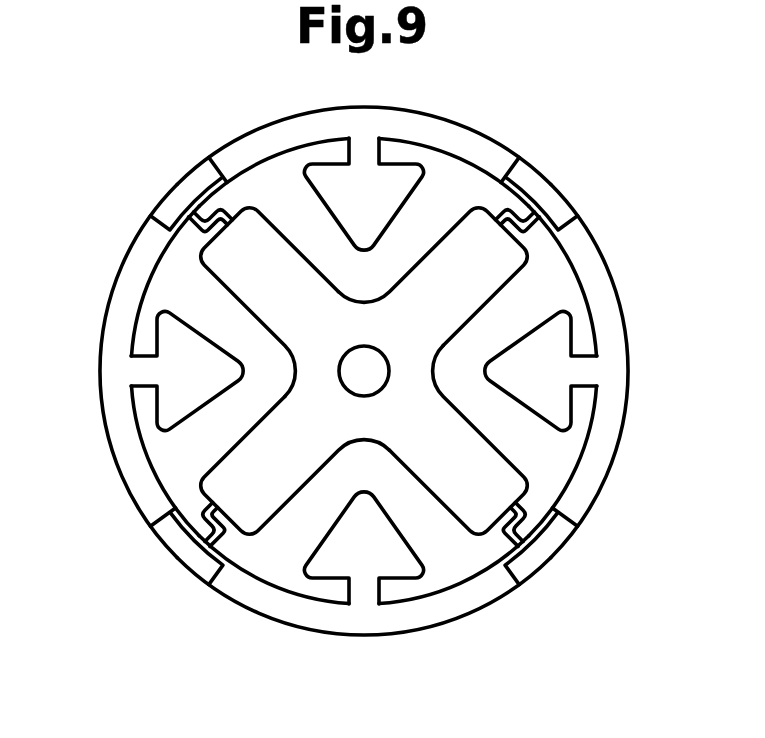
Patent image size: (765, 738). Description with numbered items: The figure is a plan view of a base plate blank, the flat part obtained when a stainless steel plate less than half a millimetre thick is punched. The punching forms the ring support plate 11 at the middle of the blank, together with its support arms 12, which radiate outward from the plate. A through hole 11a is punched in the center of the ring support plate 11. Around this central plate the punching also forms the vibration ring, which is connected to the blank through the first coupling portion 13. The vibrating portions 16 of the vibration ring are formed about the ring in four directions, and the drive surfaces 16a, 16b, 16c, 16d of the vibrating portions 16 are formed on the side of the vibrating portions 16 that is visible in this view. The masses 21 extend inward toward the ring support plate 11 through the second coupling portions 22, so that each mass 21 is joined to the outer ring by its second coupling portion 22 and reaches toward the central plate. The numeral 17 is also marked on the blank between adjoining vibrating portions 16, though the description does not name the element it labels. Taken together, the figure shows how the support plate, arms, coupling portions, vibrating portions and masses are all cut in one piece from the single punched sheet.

The ring support plate 11 is at (442, 373).
The through hole 11a is at (346, 387).
The support arms 12 is at (218, 272).
The first coupling portion 13 is at (220, 198).
The vibrating portions 16 is at (362, 369).
The drive surface 16a is at (468, 128).
The drive surface 16b is at (607, 476).
The drive surface 16c is at (455, 619).
The drive surface 16d is at (115, 458).
The joint portion between ring segments 17 is at (170, 205).
The masses 21 is at (397, 220).
The second coupling portions 22 is at (364, 371).